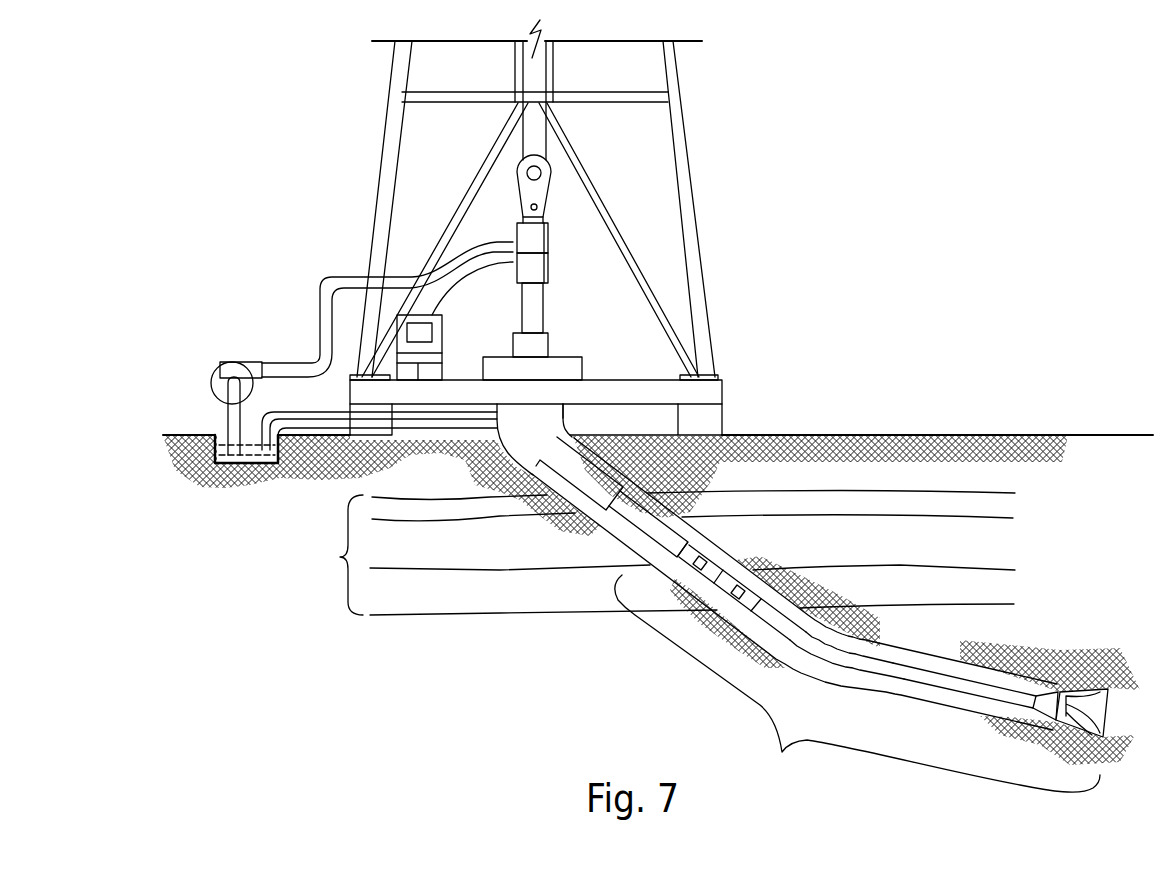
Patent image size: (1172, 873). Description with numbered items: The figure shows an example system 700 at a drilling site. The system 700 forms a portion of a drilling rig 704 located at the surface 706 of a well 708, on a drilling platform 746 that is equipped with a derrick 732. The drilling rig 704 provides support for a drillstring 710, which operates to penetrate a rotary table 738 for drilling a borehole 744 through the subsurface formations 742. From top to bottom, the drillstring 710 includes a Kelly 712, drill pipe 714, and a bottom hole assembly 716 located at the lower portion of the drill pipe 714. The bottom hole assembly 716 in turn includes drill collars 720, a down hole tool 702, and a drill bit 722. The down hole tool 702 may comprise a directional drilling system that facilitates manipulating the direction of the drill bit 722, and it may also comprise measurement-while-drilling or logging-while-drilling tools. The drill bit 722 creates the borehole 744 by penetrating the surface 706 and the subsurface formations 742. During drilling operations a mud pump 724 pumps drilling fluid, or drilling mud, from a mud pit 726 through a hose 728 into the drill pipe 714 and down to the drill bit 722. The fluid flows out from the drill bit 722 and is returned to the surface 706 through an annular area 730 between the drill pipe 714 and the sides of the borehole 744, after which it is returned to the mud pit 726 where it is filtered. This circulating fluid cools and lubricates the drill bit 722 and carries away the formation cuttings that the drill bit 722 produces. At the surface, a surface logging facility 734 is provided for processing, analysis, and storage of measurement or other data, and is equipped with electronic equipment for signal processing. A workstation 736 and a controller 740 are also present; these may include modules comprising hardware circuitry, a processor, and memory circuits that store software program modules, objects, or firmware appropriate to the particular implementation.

The system 700 is at (278, 115).
The down hole tool 702 is at (1010, 695).
The drilling rig 704 is at (700, 200).
The surface 706 is at (743, 433).
The well 708 is at (580, 430).
The drillstring 710 is at (867, 657).
The Kelly 712 is at (542, 303).
The drill pipe 714 is at (640, 512).
The bottom hole assembly 716 is at (857, 683).
The drill collars 720 is at (602, 483).
The drill bit 722 is at (1075, 697).
The mud pump 724 is at (238, 362).
The mud pit 726 is at (235, 463).
The hose 728 is at (332, 277).
The annular area 730 is at (690, 543).
The derrick 732 is at (686, 117).
The surface logging facility 734 is at (432, 310).
The workstation 736 is at (442, 327).
The rotary table 738 is at (500, 357).
The controller 740 is at (432, 333).
The subsurface formations 742 is at (657, 553).
The borehole 744 is at (892, 655).
The drilling platform 746 is at (722, 390).